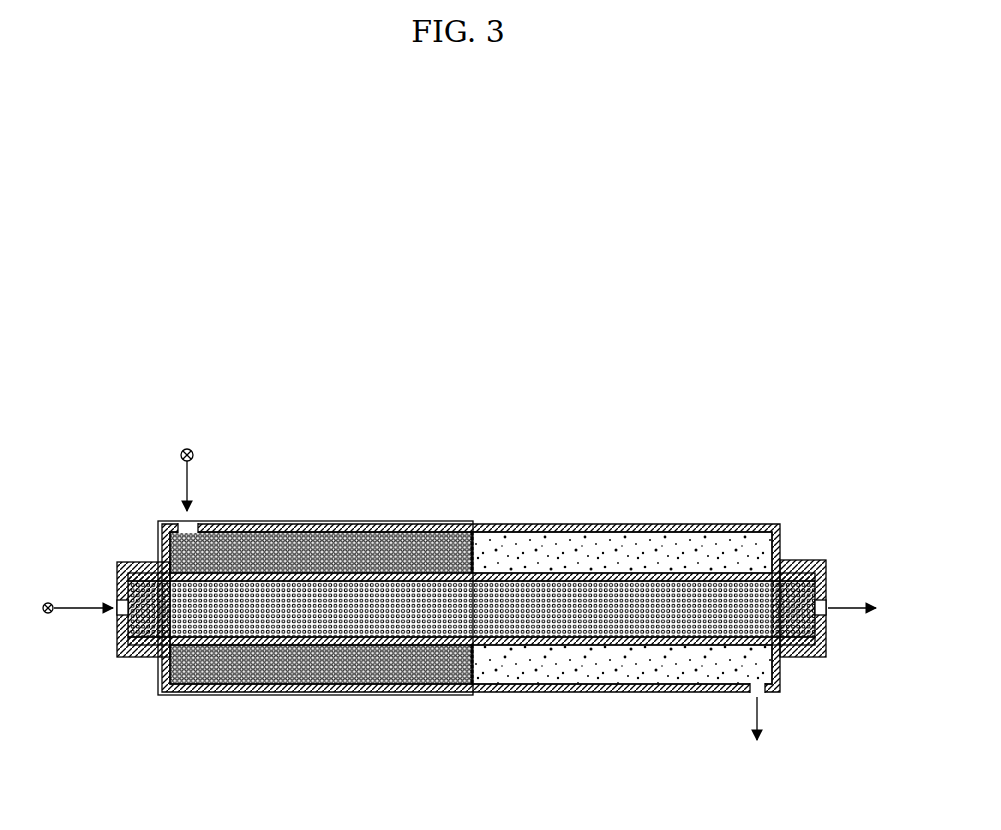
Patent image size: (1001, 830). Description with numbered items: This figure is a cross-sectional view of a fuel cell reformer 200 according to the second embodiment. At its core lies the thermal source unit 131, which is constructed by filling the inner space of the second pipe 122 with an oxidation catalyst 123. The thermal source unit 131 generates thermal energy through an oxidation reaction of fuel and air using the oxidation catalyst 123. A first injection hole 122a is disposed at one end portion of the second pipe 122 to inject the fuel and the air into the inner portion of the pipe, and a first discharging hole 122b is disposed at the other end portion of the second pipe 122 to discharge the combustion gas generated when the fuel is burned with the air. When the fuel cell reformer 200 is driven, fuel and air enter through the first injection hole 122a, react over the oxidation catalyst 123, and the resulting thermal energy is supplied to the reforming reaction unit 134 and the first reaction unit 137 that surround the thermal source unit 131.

The fuel cell reformer 200 is at (471, 599).
The second pipe 122 is at (514, 646).
The first injection hole 122a is at (117, 606).
The first discharging hole 122b is at (827, 612).
The oxidation catalyst 123 is at (561, 690).
The thermal source unit 131 is at (112, 647).
The reforming reaction unit 134 is at (294, 710).
The first reaction unit 137 is at (660, 712).